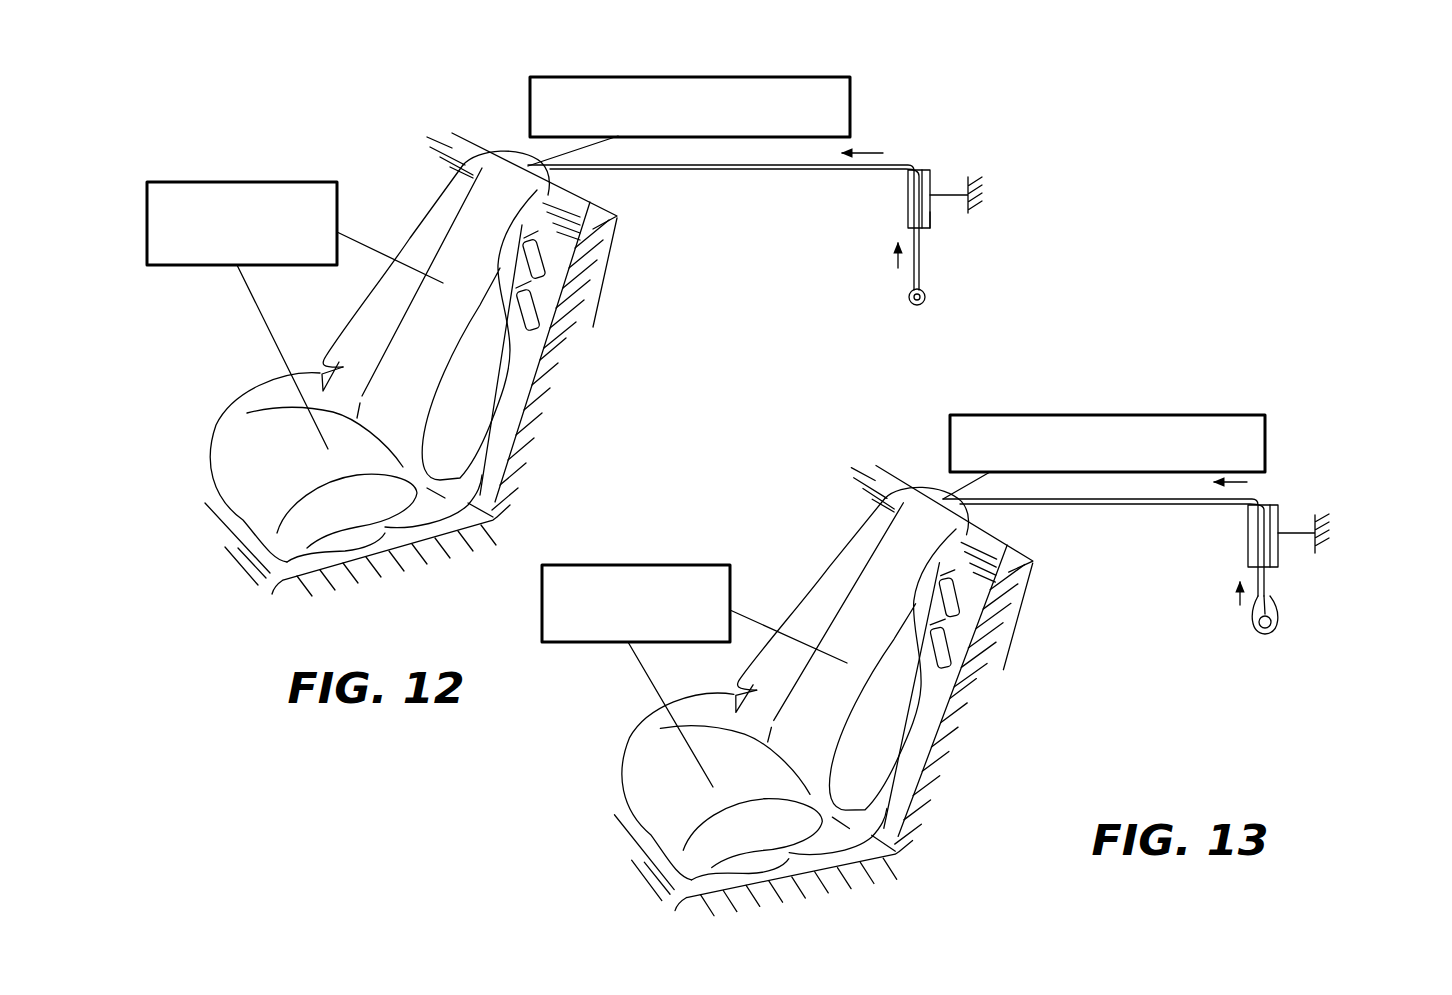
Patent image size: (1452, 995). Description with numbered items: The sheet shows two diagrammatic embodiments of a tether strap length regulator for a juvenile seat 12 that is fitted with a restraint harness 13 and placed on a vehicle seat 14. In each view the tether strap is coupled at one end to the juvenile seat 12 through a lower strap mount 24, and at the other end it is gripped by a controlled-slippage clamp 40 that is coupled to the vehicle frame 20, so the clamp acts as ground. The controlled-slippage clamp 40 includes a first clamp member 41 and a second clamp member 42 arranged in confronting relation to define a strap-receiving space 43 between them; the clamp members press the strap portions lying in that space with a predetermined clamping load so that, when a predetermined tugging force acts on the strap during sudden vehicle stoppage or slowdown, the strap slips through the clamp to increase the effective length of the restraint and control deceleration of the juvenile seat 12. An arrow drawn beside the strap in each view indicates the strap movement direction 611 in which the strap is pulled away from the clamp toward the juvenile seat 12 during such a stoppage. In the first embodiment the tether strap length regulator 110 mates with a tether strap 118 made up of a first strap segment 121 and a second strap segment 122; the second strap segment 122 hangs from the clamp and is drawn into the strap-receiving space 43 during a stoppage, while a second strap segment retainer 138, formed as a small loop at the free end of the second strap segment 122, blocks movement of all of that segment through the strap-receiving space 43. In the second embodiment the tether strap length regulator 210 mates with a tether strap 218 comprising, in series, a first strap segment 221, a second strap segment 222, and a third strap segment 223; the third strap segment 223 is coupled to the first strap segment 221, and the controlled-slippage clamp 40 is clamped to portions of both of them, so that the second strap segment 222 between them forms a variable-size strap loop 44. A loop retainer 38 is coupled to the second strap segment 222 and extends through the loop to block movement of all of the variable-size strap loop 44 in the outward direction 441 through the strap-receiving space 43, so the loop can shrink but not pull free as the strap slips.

In FIG. 12, the juvenile seat 12 is at (253, 447).
In FIG. 13, the juvenile seat 12 is at (680, 801).
In FIG. 12, the restraint harness 13 is at (241, 182).
In FIG. 13, the restraint harness 13 is at (637, 565).
In FIG. 12, the vehicle seat 14 is at (522, 407).
In FIG. 13, the vehicle seat 14 is at (933, 738).
In FIG. 12, the vehicle frame 20 is at (985, 195).
In FIG. 13, the vehicle frame 20 is at (1327, 540).
In FIG. 12, the lower strap mount 24 is at (850, 103).
In FIG. 13, the lower strap mount 24 is at (948, 431).
In FIG. 13, the loop retainer 38 is at (1267, 634).
In FIG. 12, the controlled-slippage clamp 40 is at (938, 176).
In FIG. 13, the controlled-slippage clamp 40 is at (1284, 523).
In FIG. 12, the first clamp member 41 is at (908, 194).
In FIG. 13, the first clamp member 41 is at (1253, 552).
In FIG. 12, the second clamp member 42 is at (933, 216).
In FIG. 13, the second clamp member 42 is at (1280, 557).
In FIG. 12, the strap-receiving space 43 is at (931, 165).
In FIG. 13, the variable-size strap loop 44 is at (1251, 631).
In FIG. 12, the tether strap length regulator 110 is at (949, 149).
In FIG. 12, the tether strap 118 is at (684, 176).
In FIG. 12, the first strap segment 121 is at (760, 170).
In FIG. 12, the second strap segment 122 is at (922, 270).
In FIG. 12, the second strap segment retainer 138 is at (928, 302).
In FIG. 13, the tether strap length regulator 210 is at (1295, 506).
In FIG. 13, the tether strap 218 is at (1070, 516).
In FIG. 13, the first strap segment 221 is at (1145, 507).
In FIG. 13, the second strap segment 222 is at (1277, 621).
In FIG. 13, the third strap segment 223 is at (1267, 497).
In FIG. 12, the outward direction 441 is at (893, 258).
In FIG. 12, the strap movement direction 611 is at (866, 153).
In FIG. 13, the strap movement direction 611 is at (1258, 492).